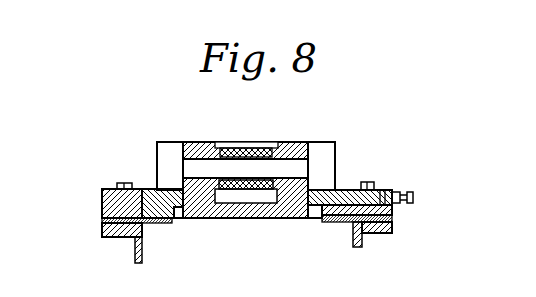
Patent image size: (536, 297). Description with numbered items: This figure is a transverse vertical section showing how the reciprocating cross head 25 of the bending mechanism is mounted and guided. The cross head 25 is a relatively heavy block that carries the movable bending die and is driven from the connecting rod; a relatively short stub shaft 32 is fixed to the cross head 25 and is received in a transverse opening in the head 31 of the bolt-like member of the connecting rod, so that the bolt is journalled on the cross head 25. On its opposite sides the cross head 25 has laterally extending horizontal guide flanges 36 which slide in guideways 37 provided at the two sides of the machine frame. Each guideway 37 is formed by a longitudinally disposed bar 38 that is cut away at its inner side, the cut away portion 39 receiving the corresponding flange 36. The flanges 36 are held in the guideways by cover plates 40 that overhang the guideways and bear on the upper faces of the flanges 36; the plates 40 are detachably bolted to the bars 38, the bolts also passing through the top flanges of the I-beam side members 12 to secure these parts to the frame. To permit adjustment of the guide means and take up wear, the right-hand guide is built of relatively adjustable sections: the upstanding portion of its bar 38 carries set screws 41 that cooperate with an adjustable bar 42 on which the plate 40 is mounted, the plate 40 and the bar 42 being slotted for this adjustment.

The I-beam side member 12 is at (135, 257).
The cross head 25 is at (199, 143).
The head 31 is at (232, 185).
The stub shaft 32 is at (293, 162).
The guide flange 36 is at (172, 215).
The guideway 37 is at (152, 197).
The bar 38 is at (103, 208).
The cut away portion 39 is at (163, 223).
The cover plate 40 is at (120, 190).
The set screw 41 is at (414, 197).
The adjustable bar 42 is at (388, 188).